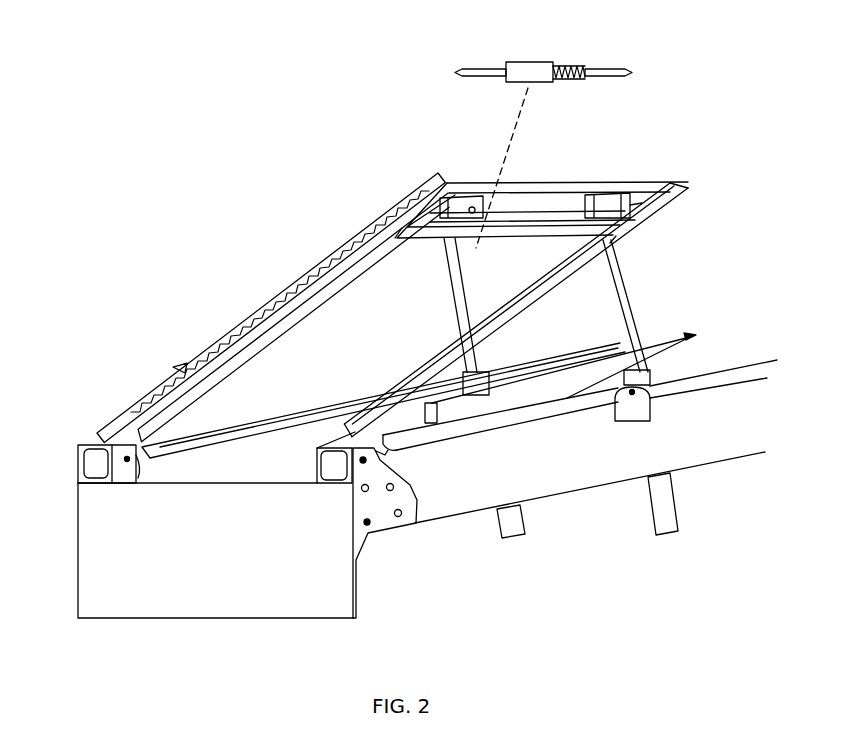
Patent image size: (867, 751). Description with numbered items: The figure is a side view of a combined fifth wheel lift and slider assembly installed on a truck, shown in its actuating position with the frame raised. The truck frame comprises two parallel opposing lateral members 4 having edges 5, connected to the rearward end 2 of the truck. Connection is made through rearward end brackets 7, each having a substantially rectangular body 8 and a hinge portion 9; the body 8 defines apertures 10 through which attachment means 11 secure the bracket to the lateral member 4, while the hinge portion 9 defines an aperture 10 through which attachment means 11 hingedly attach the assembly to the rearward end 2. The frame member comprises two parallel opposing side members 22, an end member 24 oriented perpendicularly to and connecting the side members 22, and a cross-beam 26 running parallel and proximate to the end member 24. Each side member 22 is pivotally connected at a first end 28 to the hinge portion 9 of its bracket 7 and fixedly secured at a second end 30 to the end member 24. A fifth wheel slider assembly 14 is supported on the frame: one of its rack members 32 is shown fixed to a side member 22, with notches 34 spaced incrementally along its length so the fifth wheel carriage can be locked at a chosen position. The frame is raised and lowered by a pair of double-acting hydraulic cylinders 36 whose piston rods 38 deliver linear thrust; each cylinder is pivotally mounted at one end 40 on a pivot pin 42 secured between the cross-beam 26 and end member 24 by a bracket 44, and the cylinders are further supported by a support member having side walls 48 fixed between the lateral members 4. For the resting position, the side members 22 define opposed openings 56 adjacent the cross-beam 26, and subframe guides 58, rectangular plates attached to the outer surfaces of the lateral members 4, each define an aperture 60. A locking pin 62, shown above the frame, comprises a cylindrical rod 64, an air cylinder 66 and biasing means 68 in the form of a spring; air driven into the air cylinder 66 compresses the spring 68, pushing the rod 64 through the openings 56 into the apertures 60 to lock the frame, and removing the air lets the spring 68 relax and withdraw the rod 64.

The rearward end 2 is at (215, 550).
The lateral members 4 is at (421, 484).
The edges 5 is at (276, 420).
The rearward end bracket 7 is at (383, 526).
The body 8 is at (382, 500).
The hinge portion 9 is at (382, 461).
The aperture 10 is at (402, 516).
The attachment means 11 is at (353, 512).
The fifth wheel slider assembly 14 is at (172, 232).
The opposing side members 22 is at (413, 379).
The end member 24 is at (578, 181).
The cross-beam 26 is at (514, 238).
The first end 28 is at (93, 438).
The second end 30 is at (680, 178).
The rack member 32 is at (205, 350).
The notches 34 is at (266, 300).
The hydraulic cylinders 36 is at (660, 534).
The piston rods 38 is at (463, 303).
The end 40 is at (428, 190).
The pivot pin 42 is at (606, 195).
The bracket 44 is at (630, 210).
The side walls 48 is at (575, 373).
The openings 56 is at (396, 239).
The subframe guides 58 is at (628, 414).
The aperture 60 is at (636, 394).
The locking pin 62 is at (378, 56).
The cylindrical rod 64 is at (463, 66).
The air cylinder 66 is at (529, 62).
The biasing means 68 is at (572, 68).